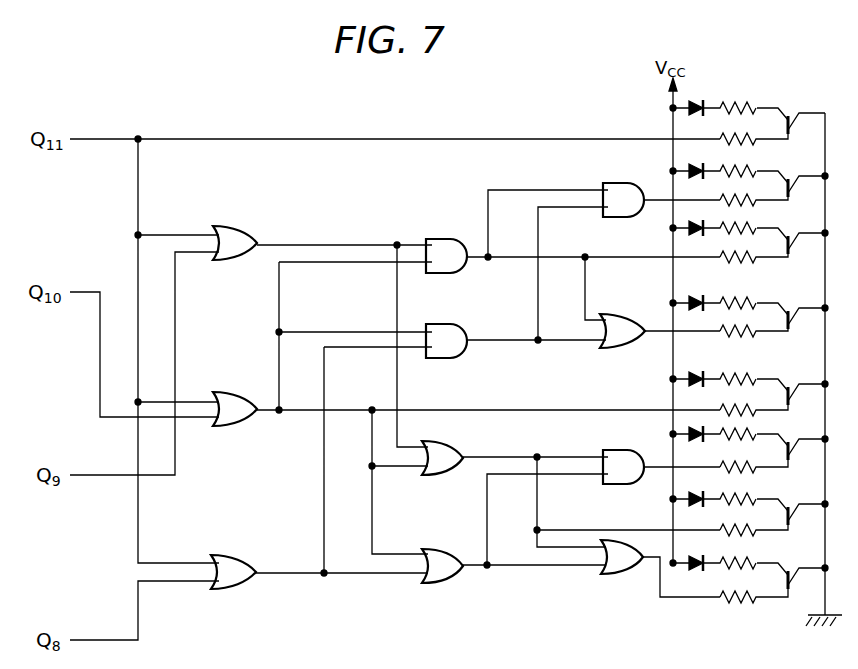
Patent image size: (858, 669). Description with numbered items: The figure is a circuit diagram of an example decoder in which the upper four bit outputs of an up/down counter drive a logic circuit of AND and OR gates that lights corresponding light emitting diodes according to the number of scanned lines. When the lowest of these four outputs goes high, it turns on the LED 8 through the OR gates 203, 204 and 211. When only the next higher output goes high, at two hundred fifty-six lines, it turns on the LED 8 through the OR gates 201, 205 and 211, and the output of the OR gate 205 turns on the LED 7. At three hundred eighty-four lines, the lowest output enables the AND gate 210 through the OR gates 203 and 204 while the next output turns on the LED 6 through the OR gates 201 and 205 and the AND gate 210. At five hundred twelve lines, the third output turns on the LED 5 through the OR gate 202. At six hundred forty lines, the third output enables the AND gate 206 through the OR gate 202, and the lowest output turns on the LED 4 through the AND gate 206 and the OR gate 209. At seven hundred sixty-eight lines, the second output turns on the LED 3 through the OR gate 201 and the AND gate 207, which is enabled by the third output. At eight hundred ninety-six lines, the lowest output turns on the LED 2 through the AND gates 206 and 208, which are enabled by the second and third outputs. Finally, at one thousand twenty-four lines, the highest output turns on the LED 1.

The OR gate 201 is at (228, 224).
The OR gate 202 is at (226, 391).
The OR gate 203 is at (224, 553).
The OR gate 204 is at (433, 547).
The OR gate 205 is at (441, 443).
The AND gate 206 is at (437, 322).
The AND gate 207 is at (437, 237).
The AND gate 208 is at (613, 181).
The OR gate 209 is at (612, 312).
The AND gate 210 is at (613, 448).
The OR gate 211 is at (613, 578).
The LED 1 LED1 is at (701, 102).
The LED 2 LED2 is at (690, 168).
The LED 3 LED3 is at (688, 231).
The LED 4 LED4 is at (700, 298).
The LED 5 LED5 is at (700, 374).
The LED 6 LED6 is at (692, 430).
The LED 7 LED7 is at (690, 507).
The LED 8 LED8 is at (690, 577).